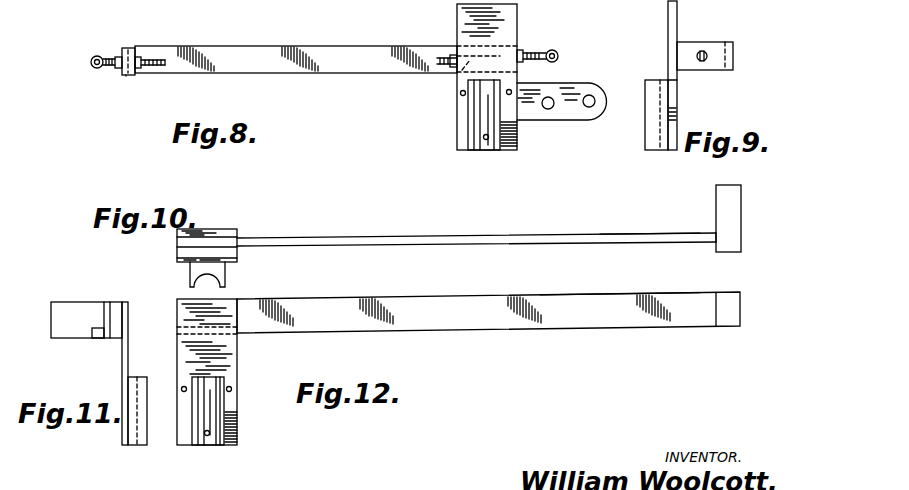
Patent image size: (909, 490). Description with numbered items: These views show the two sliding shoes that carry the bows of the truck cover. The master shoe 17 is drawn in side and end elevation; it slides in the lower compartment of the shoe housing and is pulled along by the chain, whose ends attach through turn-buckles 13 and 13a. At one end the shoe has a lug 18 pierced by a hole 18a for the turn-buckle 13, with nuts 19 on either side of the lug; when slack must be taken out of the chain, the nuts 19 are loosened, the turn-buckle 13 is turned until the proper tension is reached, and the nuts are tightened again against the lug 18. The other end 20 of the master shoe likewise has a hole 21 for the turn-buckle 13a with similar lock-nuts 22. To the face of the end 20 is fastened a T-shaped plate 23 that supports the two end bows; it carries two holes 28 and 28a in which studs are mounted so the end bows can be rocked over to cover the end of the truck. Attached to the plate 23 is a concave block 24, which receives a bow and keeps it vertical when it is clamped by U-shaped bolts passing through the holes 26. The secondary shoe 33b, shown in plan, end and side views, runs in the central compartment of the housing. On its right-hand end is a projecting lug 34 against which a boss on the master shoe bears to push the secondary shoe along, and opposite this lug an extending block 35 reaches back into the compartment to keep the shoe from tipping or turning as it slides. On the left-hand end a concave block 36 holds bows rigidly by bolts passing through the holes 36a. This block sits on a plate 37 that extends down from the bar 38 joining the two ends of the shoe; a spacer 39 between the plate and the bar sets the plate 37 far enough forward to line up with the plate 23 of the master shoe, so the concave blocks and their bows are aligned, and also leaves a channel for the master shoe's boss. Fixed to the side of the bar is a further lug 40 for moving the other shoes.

In FIG. 8, the turn-buckle 13 is at (101, 57).
In FIG. 8, the turn-buckle 13a is at (540, 60).
In FIG. 9, the turn-buckle 13a is at (708, 56).
In FIG. 8, the master shoe 17 is at (372, 78).
In FIG. 8, the lug 18 is at (131, 47).
In FIG. 8, the hole 18a is at (125, 78).
In FIG. 8, the nuts 19 is at (141, 57).
In FIG. 8, the end of master shoe 20 is at (465, 28).
In FIG. 9, the end of master shoe 20 is at (672, 52).
In FIG. 8, the hole 21 is at (460, 72).
In FIG. 8, the lock-nuts 22 is at (450, 62).
In FIG. 8, the plate 23 is at (532, 118).
In FIG. 9, the plate 23 is at (677, 88).
In FIG. 8, the concave block 24 is at (498, 150).
In FIG. 9, the concave block 24 is at (652, 98).
In FIG. 8, the holes 26 is at (511, 92).
In FIG. 8, the hole 28 is at (552, 108).
In FIG. 8, the hole 28a is at (592, 106).
In FIG. 10, the secondary shoe 33b is at (630, 232).
In FIG. 12, the secondary shoe 33b is at (598, 318).
In FIG. 10, the projecting lug 34 is at (736, 246).
In FIG. 12, the projecting lug 34 is at (735, 300).
In FIG. 10, the extending block 35 is at (735, 204).
In FIG. 11, the extending block 35 is at (60, 312).
In FIG. 10, the concave block 36 is at (225, 272).
In FIG. 11, the concave block 36 is at (143, 438).
In FIG. 12, the concave block 36 is at (224, 412).
In FIG. 12, the holes 36a is at (181, 392).
In FIG. 10, the plate 37 is at (179, 258).
In FIG. 11, the plate 37 is at (126, 350).
In FIG. 12, the plate 37 is at (225, 360).
In FIG. 10, the bar 38 is at (440, 247).
In FIG. 12, the bar 38 is at (462, 326).
In FIG. 10, the spacer 39 is at (232, 246).
In FIG. 11, the spacer 39 is at (113, 302).
In FIG. 10, the lug 40 is at (215, 234).
In FIG. 11, the lug 40 is at (96, 338).
In FIG. 12, the lug 40 is at (186, 330).